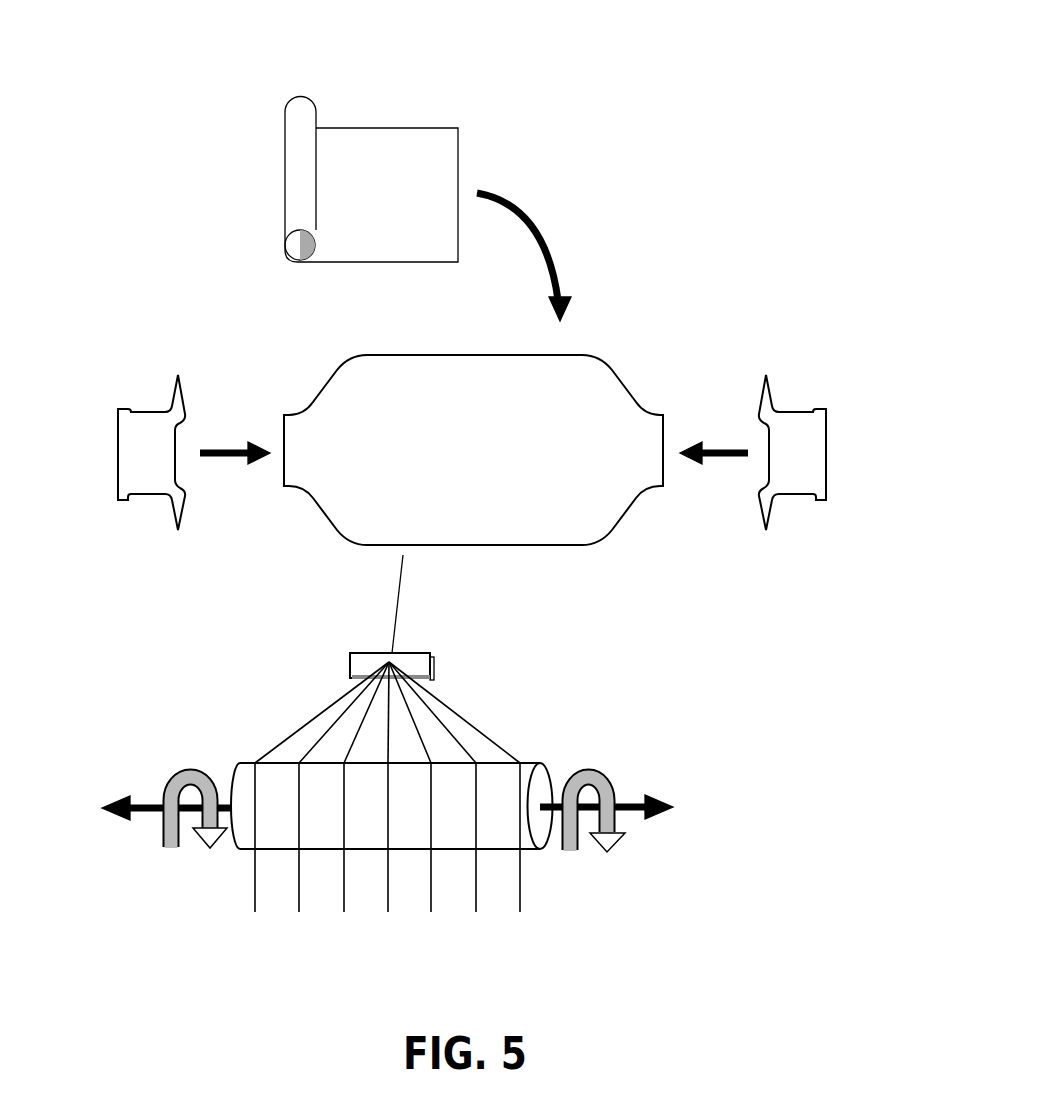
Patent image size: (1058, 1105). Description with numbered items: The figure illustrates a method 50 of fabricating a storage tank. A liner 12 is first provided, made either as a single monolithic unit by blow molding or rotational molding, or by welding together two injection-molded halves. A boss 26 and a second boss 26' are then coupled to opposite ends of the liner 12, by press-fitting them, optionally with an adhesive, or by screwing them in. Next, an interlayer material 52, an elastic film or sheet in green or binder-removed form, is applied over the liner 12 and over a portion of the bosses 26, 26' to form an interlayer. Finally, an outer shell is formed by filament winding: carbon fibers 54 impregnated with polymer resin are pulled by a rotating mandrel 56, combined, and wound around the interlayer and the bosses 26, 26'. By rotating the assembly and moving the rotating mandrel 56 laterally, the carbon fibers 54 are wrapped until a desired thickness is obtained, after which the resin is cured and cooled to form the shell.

The method 50 is at (668, 74).
The interlayer material 52 is at (350, 145).
The boss 26 is at (165, 436).
The second boss 26' is at (776, 435).
The liner 12 is at (543, 533).
The carbon fibers 54 is at (398, 604).
The rotating mandrel 56 is at (248, 840).